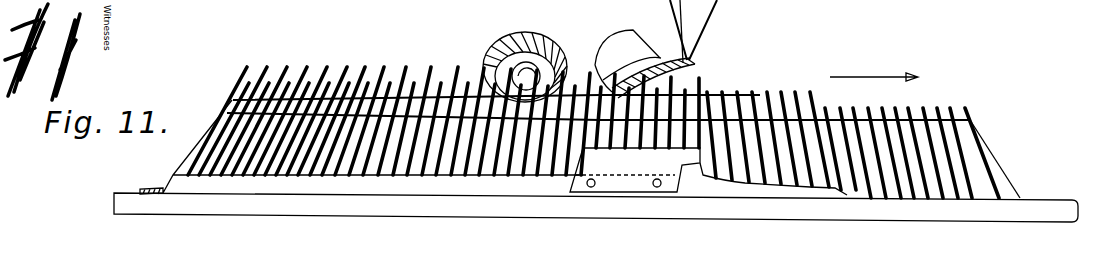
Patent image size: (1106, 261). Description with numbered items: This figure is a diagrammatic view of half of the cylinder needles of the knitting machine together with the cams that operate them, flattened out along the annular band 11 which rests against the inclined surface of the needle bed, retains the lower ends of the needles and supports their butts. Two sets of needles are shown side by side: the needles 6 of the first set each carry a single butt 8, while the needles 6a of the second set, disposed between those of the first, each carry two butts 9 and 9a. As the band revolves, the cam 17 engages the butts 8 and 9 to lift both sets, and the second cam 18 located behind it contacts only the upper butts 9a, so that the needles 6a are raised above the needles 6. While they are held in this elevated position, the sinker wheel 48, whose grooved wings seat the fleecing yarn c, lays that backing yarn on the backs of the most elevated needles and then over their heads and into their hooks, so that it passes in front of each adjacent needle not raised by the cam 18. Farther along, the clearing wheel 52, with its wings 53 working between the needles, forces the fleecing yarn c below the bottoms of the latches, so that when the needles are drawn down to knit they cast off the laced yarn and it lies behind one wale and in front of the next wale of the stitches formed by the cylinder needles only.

The annular band 11 is at (1060, 207).
The single butt 8 is at (508, 182).
The lower butt 9 is at (522, 180).
The upper butt 9a is at (517, 145).
The cam 17 is at (840, 192).
The second cam 18 is at (703, 165).
The clearing wheel 52 is at (496, 56).
The wings 53 is at (541, 50).
The cylinder needles 6 is at (733, 127).
The cylinder needles 6a is at (583, 176).
The sinker wheel 48 is at (706, 30).
The fleecing yarn c is at (704, 30).